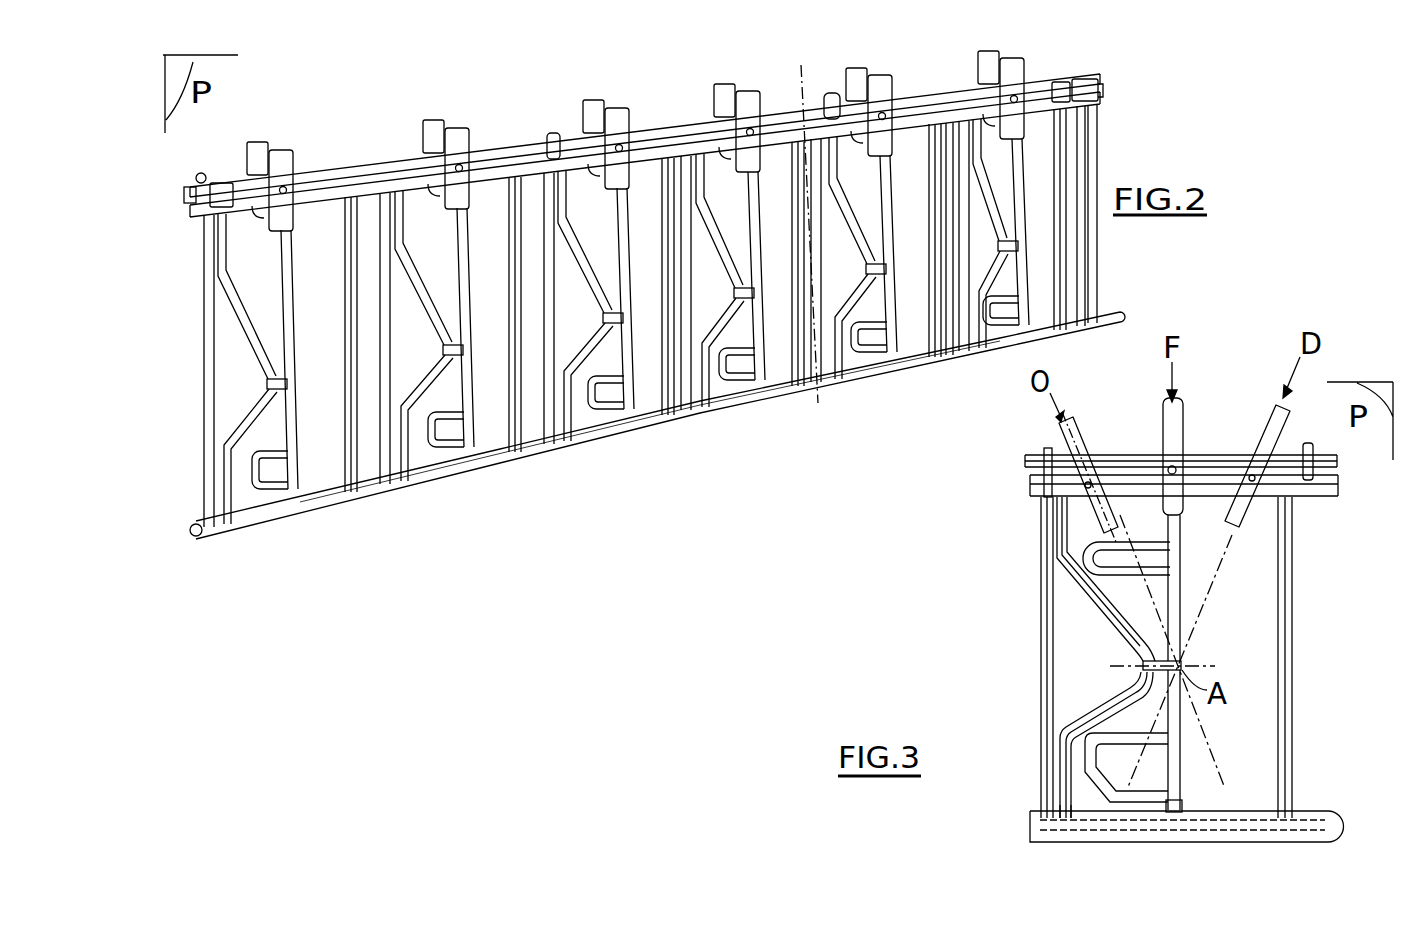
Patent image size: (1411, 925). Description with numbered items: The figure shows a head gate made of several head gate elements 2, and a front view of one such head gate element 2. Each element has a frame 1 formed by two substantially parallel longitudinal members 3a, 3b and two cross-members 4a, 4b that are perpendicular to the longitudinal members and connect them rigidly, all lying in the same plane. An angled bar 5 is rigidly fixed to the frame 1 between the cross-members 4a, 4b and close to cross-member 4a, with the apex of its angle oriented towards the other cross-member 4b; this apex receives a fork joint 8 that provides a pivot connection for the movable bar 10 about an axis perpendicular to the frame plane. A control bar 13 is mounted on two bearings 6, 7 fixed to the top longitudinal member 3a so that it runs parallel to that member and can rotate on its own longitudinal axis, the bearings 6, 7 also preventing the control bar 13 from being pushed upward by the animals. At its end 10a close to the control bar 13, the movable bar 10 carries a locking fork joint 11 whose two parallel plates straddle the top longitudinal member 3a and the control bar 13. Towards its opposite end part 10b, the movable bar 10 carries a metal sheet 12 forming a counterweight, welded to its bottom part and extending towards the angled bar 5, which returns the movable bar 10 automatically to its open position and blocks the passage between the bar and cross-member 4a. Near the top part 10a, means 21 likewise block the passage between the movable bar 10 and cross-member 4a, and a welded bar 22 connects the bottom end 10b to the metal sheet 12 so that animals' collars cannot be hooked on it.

In FIG. 2, the frame 1 is at (207, 358).
In FIG. 3, the frame 1 is at (1180, 645).
In FIG. 3, the head gate element 2 is at (1190, 613).
In FIG. 2, the top longitudinal member 3a is at (418, 165).
In FIG. 3, the top longitudinal member 3a is at (1332, 493).
In FIG. 2, the longitudinal member 3b is at (441, 477).
In FIG. 3, the longitudinal member 3b is at (1307, 817).
In FIG. 2, the cross-member 4a is at (392, 455).
In FIG. 3, the cross-member 4a is at (1047, 652).
In FIG. 2, the cross-member 4b is at (532, 425).
In FIG. 3, the cross-member 4b is at (1288, 670).
In FIG. 2, the angled bar 5 is at (405, 285).
In FIG. 3, the angled bar 5 is at (1083, 612).
In FIG. 3, the bearing 6 is at (1054, 434).
In FIG. 3, the bearing 7 is at (1313, 440).
In FIG. 3, the fork joint 8 is at (1128, 700).
In FIG. 2, the movable bar 10 is at (474, 312).
In FIG. 3, the movable bar 10 is at (1180, 610).
In FIG. 3, the end of the movable bar 10a is at (1165, 530).
In FIG. 3, the end part of the movable bar 10b is at (1180, 795).
In FIG. 2, the locking fork joint 11 is at (457, 147).
In FIG. 3, the locking fork joint 11 is at (1180, 500).
In FIG. 2, the metal sheet forming a counterweight 12 is at (455, 437).
In FIG. 3, the metal sheet forming a counterweight 12 is at (1103, 752).
In FIG. 2, the control bar 13 is at (507, 153).
In FIG. 3, the control bar 13 is at (1217, 455).
In FIG. 3, the means of blocking the passage 21 is at (1087, 553).
In FIG. 3, the welded bar 22 is at (1080, 798).